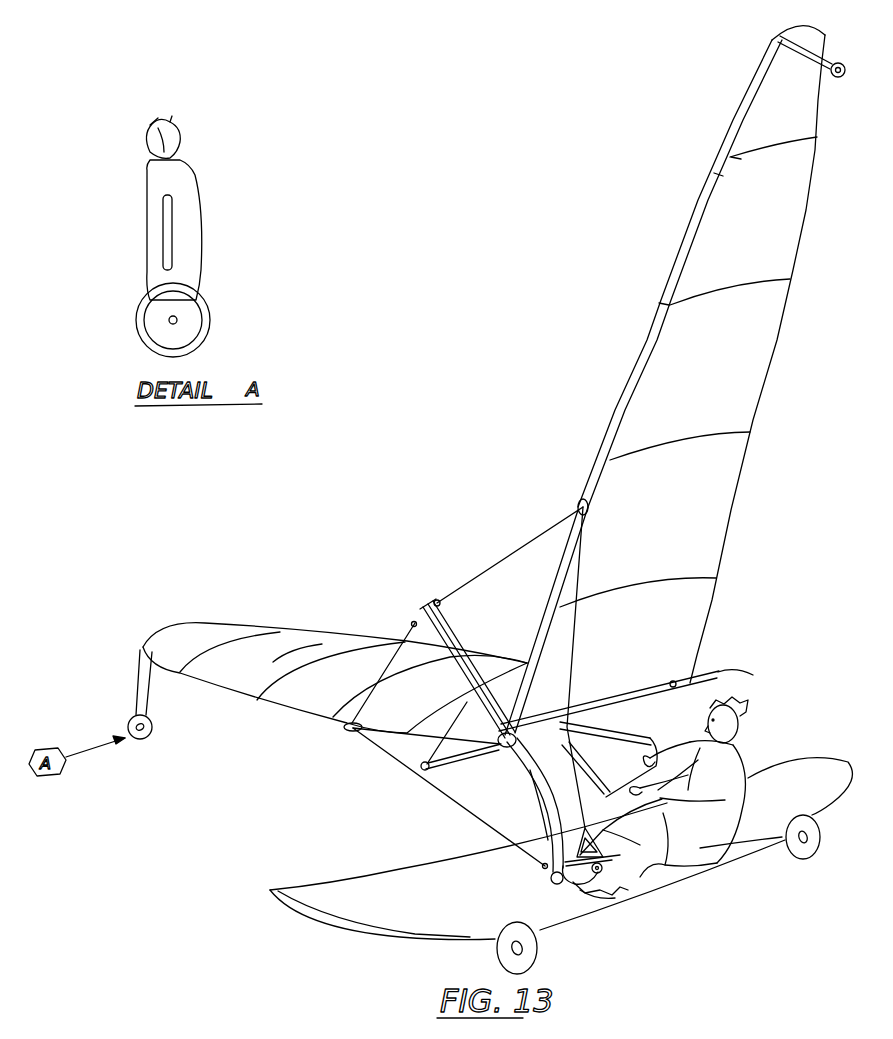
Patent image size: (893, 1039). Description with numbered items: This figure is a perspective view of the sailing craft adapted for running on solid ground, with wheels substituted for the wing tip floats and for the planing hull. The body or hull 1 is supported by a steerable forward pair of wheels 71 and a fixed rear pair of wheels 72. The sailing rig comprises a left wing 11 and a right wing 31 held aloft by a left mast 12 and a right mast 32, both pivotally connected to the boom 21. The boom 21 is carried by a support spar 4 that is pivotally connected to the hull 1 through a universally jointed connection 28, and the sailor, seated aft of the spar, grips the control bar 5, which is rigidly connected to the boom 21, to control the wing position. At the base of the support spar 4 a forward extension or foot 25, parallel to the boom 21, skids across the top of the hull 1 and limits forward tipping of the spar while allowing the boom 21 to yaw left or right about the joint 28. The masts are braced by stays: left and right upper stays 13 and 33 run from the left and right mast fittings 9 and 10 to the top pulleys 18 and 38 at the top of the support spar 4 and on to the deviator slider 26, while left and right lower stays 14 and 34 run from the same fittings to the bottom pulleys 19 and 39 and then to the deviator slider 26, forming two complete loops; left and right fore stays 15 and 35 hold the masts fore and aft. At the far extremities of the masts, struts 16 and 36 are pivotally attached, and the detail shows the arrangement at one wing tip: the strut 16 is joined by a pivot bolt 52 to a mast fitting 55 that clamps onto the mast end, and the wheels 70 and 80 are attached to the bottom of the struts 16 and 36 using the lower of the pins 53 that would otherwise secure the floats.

The hull 1 is at (561, 849).
The support spar 4 is at (467, 668).
The control bar 5 is at (625, 733).
The left mast fitting 9 is at (593, 506).
The right mast fitting 10 is at (599, 394).
The left wing 11 is at (710, 378).
The left mast 12 is at (625, 382).
The left upper stay 13 is at (510, 555).
The left lower stay 14 is at (568, 702).
The left fore stay 15 is at (541, 621).
The left strut 16 is at (808, 51).
The top pulley 18 is at (434, 586).
The bottom pulley 19 is at (571, 880).
The boom 21 is at (481, 754).
The foot 25 is at (583, 880).
The deviator slider 26 is at (556, 816).
The universally jointed connection 28 is at (630, 887).
The right wing 31 is at (332, 633).
The right mast 32 is at (248, 700).
The right upper stay 33 is at (392, 679).
The right lower stay 34 is at (449, 797).
The right fore stay 35 is at (426, 743).
The right strut 36 is at (128, 682).
The top pulley 38 is at (384, 662).
The bottom pulley 39 is at (529, 871).
The pivot bolt 52 is at (192, 230).
The pins 53 is at (165, 314).
The mast fitting 55 is at (185, 135).
The left wing tip wheel 70 is at (215, 320).
The forward wheels 71 is at (497, 948).
The rear wheels 72 is at (816, 846).
The right wing tip wheel 80 is at (142, 749).